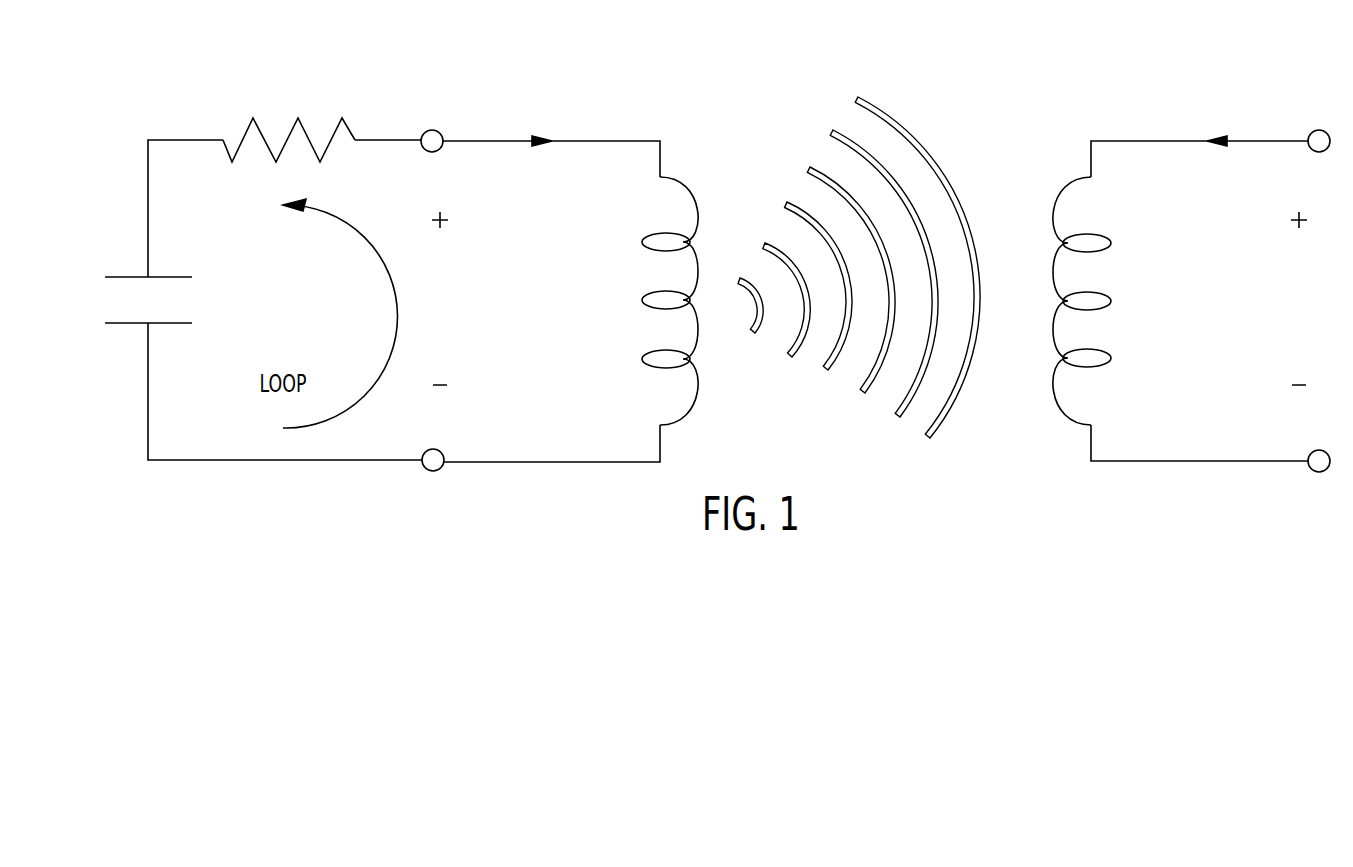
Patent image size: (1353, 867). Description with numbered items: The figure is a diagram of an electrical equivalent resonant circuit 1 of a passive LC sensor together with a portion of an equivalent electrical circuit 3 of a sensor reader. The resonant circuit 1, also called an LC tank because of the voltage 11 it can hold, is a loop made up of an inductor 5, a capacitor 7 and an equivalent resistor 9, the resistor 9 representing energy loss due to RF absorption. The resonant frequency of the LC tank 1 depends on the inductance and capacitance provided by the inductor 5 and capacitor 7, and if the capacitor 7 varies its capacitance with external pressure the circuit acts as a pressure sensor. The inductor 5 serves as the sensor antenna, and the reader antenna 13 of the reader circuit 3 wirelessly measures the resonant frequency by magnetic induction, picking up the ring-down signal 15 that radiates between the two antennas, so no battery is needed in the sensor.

The electrical equivalent resonant circuit 1 is at (507, 140).
The equivalent electrical circuit of a sensor reader 3 is at (1136, 140).
The inductor 5 is at (679, 178).
The capacitor 7 is at (123, 275).
The equivalent resistor 9 is at (245, 133).
The voltage 11 is at (435, 288).
The reader antenna 13 is at (1070, 180).
The ring-down signal 15 is at (868, 94).